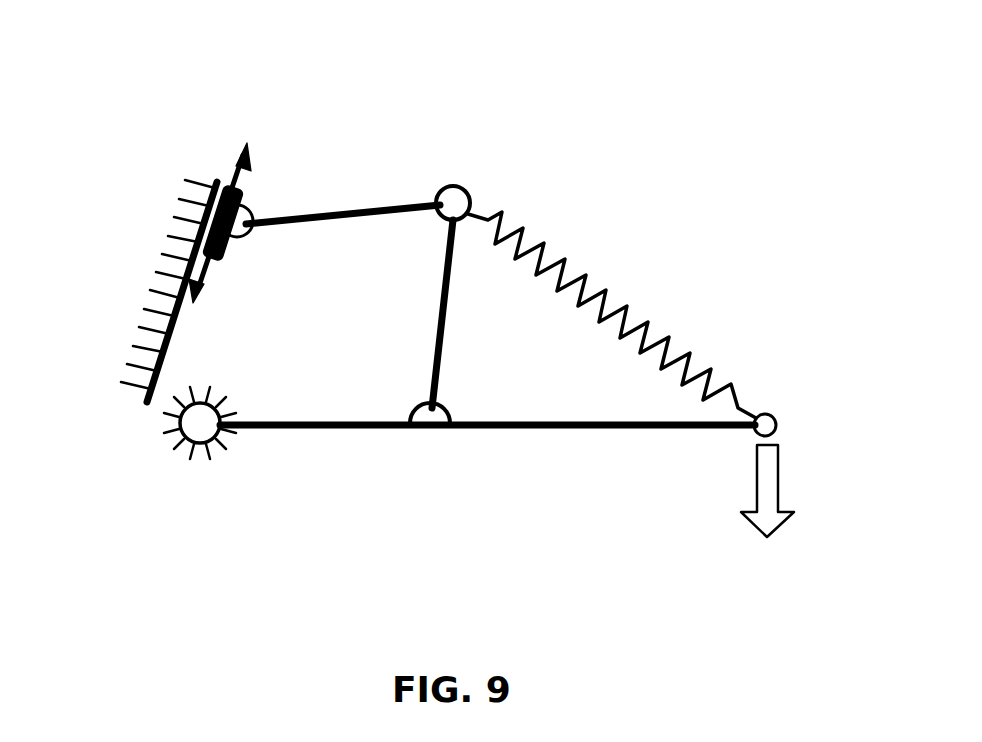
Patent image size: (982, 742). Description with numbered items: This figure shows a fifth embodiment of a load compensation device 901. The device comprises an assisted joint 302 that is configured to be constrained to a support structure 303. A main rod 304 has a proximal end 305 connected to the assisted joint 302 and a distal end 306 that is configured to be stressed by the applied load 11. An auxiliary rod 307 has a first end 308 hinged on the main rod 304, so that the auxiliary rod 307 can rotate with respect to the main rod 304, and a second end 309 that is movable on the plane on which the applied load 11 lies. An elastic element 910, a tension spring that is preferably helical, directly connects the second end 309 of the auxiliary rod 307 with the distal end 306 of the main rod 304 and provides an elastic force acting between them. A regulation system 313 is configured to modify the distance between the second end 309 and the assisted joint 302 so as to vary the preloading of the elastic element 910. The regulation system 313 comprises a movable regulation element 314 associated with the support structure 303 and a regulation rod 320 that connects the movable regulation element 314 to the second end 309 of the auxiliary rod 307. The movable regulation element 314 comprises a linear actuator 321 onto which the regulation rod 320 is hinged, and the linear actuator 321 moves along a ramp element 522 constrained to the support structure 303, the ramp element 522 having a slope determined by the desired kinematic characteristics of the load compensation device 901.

The load compensation device 901 is at (708, 114).
The ramp element 522 is at (197, 171).
The regulation system 313 is at (342, 146).
The movable regulation element 314 is at (249, 201).
The regulation rod 320 is at (395, 206).
The linear actuator 321 is at (240, 238).
The second end 309 is at (471, 197).
The elastic element 910 is at (640, 293).
The auxiliary rod 307 is at (444, 313).
The first end 308 is at (412, 407).
The support structure 303 is at (114, 394).
The assisted joint 302 is at (200, 430).
The proximal end 305 is at (227, 431).
The main rod 304 is at (477, 430).
The distal end 306 is at (737, 432).
The applied load 11 is at (767, 483).